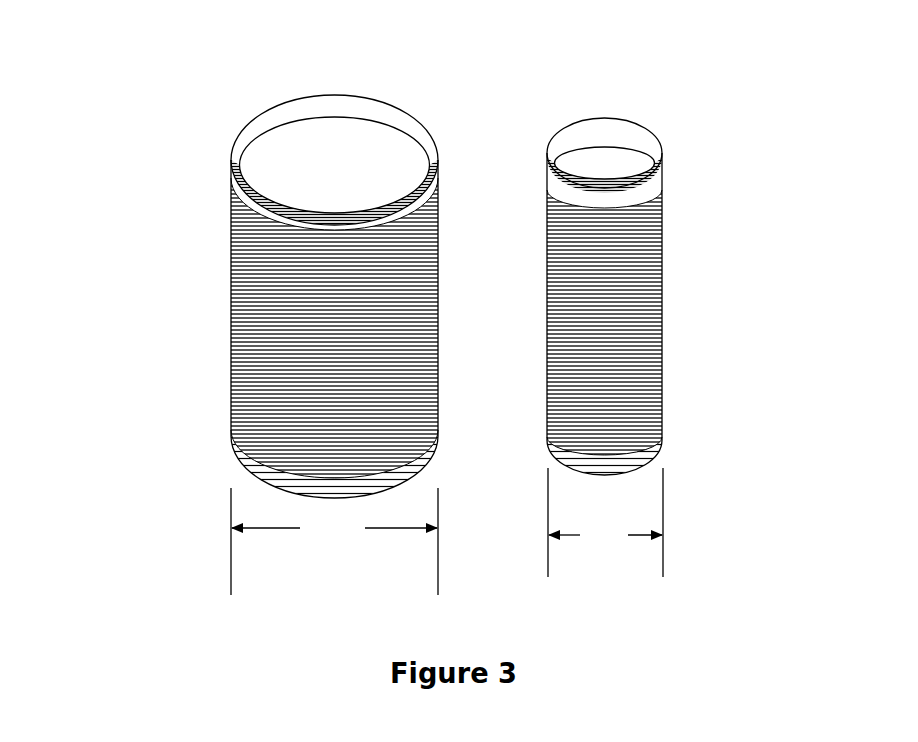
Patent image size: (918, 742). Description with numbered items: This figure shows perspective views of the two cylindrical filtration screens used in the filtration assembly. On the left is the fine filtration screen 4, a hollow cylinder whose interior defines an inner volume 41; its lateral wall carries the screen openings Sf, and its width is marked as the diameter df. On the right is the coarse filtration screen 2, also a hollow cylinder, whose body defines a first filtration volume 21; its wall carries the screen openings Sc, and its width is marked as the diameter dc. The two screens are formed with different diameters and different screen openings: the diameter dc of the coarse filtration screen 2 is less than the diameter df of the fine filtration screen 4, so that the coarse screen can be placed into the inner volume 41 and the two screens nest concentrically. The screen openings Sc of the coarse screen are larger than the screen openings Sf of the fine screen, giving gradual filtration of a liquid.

The fine filtration screen 4 is at (242, 269).
The inner volume 41 is at (313, 165).
The screen openings of the fine filtration screen Sf is at (293, 405).
The diameter of the fine filtration screen df is at (334, 541).
The coarse filtration screen 2 is at (667, 250).
The first filtration volume 21 is at (605, 158).
The screen openings of the coarse filtration screen Sc is at (613, 402).
The diameter of the coarse filtration screen dc is at (605, 522).